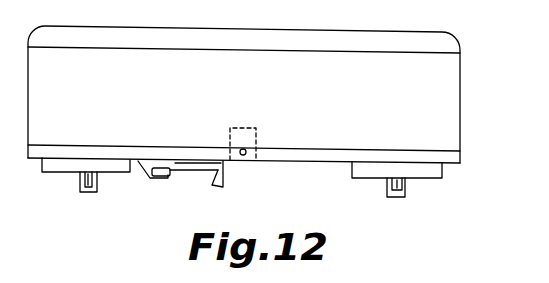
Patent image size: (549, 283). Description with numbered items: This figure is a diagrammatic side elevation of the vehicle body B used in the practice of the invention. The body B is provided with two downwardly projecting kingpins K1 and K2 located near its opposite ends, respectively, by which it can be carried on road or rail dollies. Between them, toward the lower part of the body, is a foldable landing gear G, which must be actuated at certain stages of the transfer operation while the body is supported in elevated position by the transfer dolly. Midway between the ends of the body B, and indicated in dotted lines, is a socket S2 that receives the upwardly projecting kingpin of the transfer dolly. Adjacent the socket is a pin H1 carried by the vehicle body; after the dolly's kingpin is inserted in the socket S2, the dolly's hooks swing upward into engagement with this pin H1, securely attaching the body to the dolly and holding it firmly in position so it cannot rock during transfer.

The vehicle body B is at (443, 118).
The kingpin K2 is at (85, 192).
The kingpin K1 is at (403, 190).
The landing gear G is at (212, 184).
The socket S2 is at (255, 142).
The pin H1 is at (246, 151).